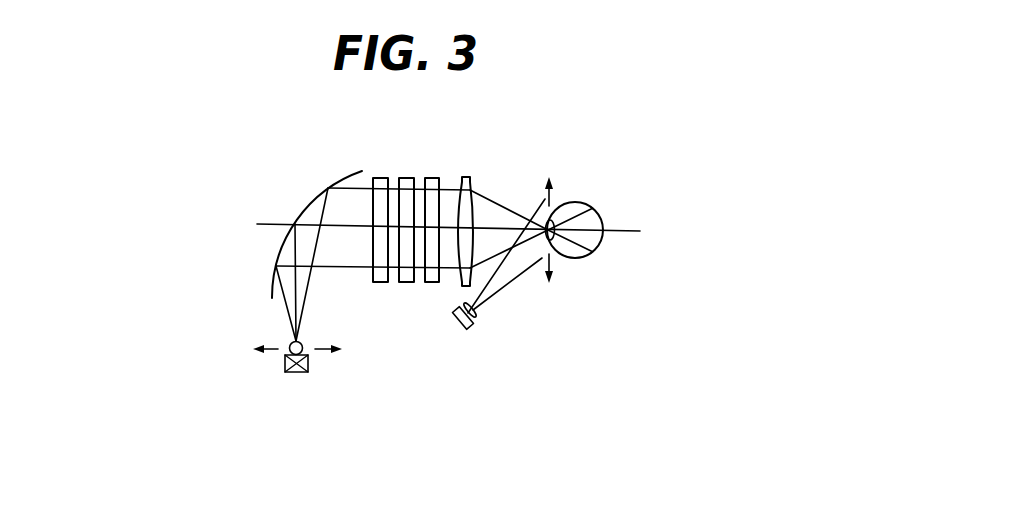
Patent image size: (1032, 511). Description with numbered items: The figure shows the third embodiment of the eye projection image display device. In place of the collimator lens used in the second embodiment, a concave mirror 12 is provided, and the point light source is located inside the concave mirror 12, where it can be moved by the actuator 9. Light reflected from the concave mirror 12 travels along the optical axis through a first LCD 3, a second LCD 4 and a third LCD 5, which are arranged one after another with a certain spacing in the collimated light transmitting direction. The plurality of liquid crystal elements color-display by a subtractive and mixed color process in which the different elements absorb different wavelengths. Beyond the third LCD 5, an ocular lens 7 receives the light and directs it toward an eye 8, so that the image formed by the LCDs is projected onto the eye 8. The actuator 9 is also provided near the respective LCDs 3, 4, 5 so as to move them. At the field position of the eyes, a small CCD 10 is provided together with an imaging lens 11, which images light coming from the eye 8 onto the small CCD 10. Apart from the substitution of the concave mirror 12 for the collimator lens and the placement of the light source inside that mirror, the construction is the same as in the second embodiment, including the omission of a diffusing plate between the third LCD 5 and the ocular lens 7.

The first LCD 3 is at (380, 178).
The second LCD 4 is at (408, 178).
The third LCD 5 is at (440, 178).
The ocular lens 7 is at (470, 178).
The eye 8 is at (591, 207).
The actuator 9 is at (308, 366).
The small CCD 10 is at (470, 329).
The imaging lens 11 is at (478, 313).
The concave mirror 12 is at (311, 204).